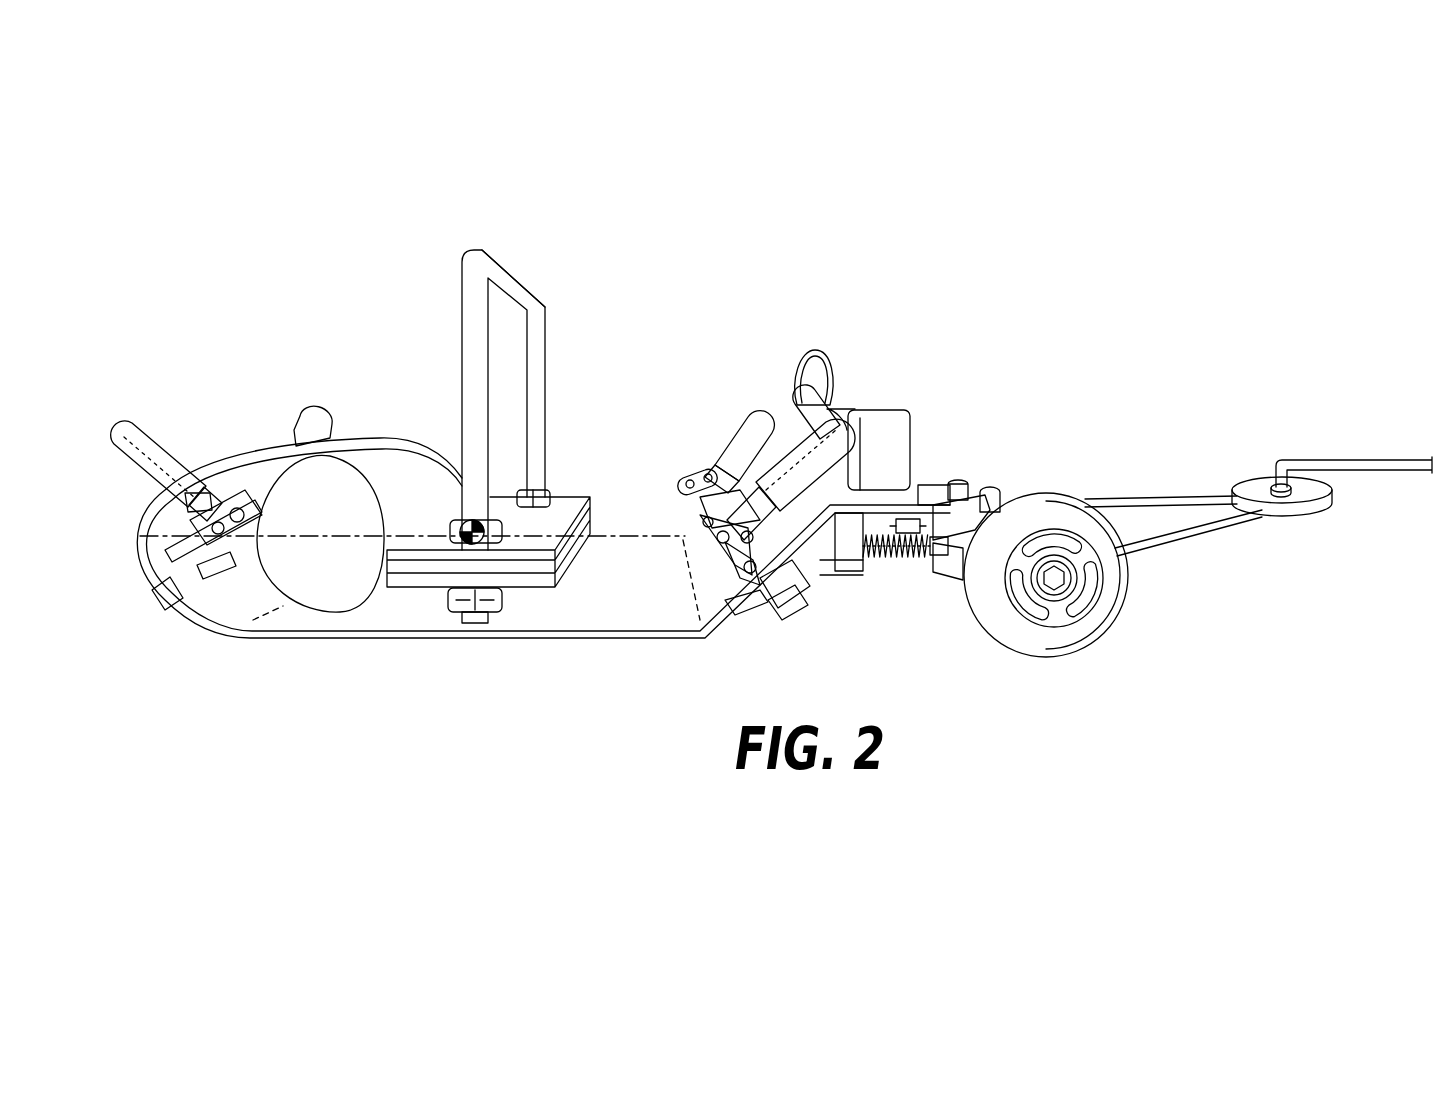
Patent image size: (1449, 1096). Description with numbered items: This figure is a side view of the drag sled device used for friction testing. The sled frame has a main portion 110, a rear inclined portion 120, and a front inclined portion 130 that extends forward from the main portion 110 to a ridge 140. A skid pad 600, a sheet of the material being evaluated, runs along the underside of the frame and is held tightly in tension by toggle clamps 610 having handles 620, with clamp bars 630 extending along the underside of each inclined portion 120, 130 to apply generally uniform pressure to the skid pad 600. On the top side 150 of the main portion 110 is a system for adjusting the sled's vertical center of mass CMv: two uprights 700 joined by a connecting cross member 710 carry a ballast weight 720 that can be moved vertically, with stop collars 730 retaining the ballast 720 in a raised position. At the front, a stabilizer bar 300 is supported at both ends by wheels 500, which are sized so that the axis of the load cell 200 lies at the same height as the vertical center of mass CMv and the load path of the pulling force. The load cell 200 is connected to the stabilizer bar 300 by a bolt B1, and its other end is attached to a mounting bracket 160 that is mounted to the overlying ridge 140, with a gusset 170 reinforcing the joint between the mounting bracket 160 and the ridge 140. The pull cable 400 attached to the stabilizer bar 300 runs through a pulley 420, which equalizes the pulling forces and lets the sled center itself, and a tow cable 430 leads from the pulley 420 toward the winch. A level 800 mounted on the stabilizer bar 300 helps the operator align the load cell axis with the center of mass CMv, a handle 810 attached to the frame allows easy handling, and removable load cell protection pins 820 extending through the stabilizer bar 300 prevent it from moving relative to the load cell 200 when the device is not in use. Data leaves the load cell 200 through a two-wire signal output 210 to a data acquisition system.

The main portion 110 is at (552, 612).
The inclined portion 120 is at (241, 598).
The inclined portion 130 is at (725, 617).
The ridge 140 is at (935, 483).
The top side 150 is at (618, 550).
The mounting bracket 160 is at (850, 568).
The gusset 170 is at (813, 552).
The load cell 200 is at (875, 562).
The two-wire signal output 210 is at (813, 358).
The stabilizer bar 300 is at (972, 513).
The pull cable 400 is at (1157, 497).
The pulley 420 is at (1260, 482).
The tow cable 430 is at (1347, 458).
The wheels 500 is at (1063, 494).
The skid pad 600 is at (196, 600).
The toggle clamps 610 is at (688, 478).
The handles 620 is at (145, 420).
The clamp bars 630 is at (805, 615).
The uprights 700 is at (477, 318).
The cross member 710 is at (512, 290).
The ballast weight 720 is at (572, 486).
The stop collars 730 is at (458, 612).
The level 800 is at (1000, 482).
The handle 810 is at (873, 405).
The load cell protection pins 820 is at (937, 553).
The bolt B1 is at (890, 535).
The vertical center of mass CMv is at (458, 526).